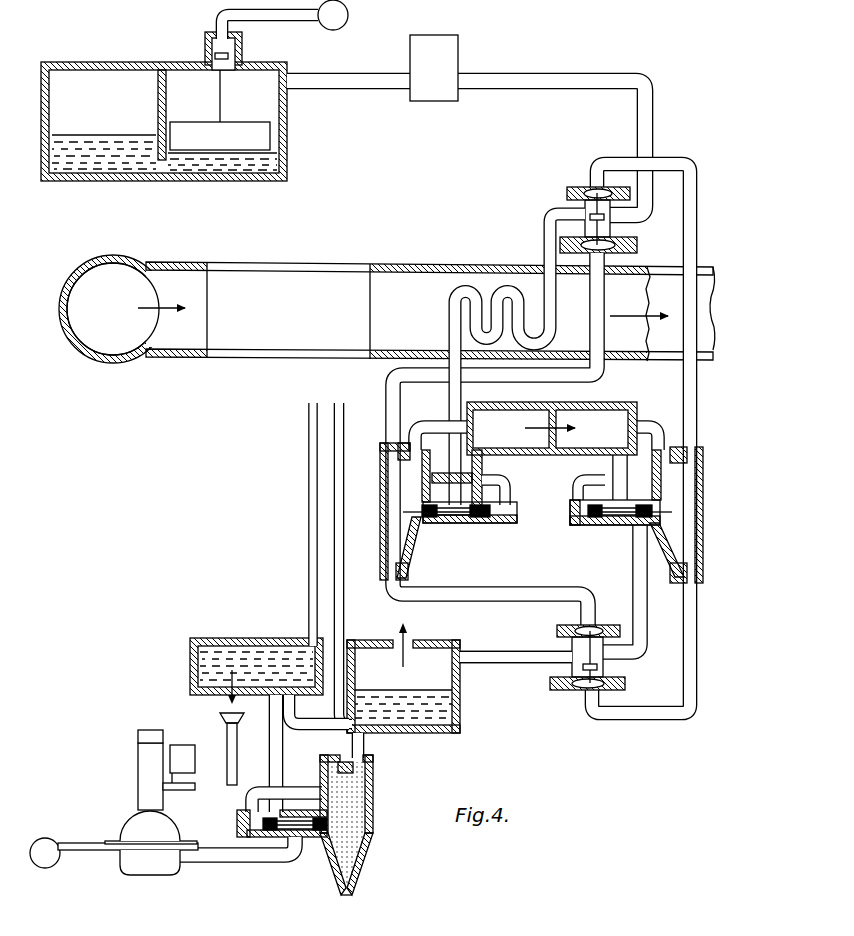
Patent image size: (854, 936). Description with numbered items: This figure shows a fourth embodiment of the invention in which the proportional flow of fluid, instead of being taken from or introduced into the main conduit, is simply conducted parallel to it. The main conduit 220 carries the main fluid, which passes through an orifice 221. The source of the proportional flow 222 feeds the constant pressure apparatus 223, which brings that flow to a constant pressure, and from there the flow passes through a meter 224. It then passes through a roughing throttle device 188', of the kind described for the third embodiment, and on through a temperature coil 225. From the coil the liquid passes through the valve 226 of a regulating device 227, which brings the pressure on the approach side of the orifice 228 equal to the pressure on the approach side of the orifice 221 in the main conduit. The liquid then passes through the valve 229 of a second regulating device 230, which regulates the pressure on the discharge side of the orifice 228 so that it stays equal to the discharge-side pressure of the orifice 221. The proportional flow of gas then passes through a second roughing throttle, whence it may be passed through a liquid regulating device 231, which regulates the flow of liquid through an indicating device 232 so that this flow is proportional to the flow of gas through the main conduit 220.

The main conduit 220 is at (386, 309).
The orifice 221 is at (647, 300).
The source of the proportional flow 222 is at (334, 20).
The constant pressure apparatus 223 is at (263, 104).
The meter 224 is at (437, 47).
The temperature coil 225 is at (466, 287).
The valve 226 is at (457, 513).
The regulating device 227 is at (410, 528).
The orifice 228 is at (550, 443).
The valve 229 is at (610, 523).
The regulating device 230 is at (687, 553).
The liquid regulating device 231 is at (373, 766).
The indicating device 232 is at (157, 863).
The roughing throttle device 188' is at (488, 397).